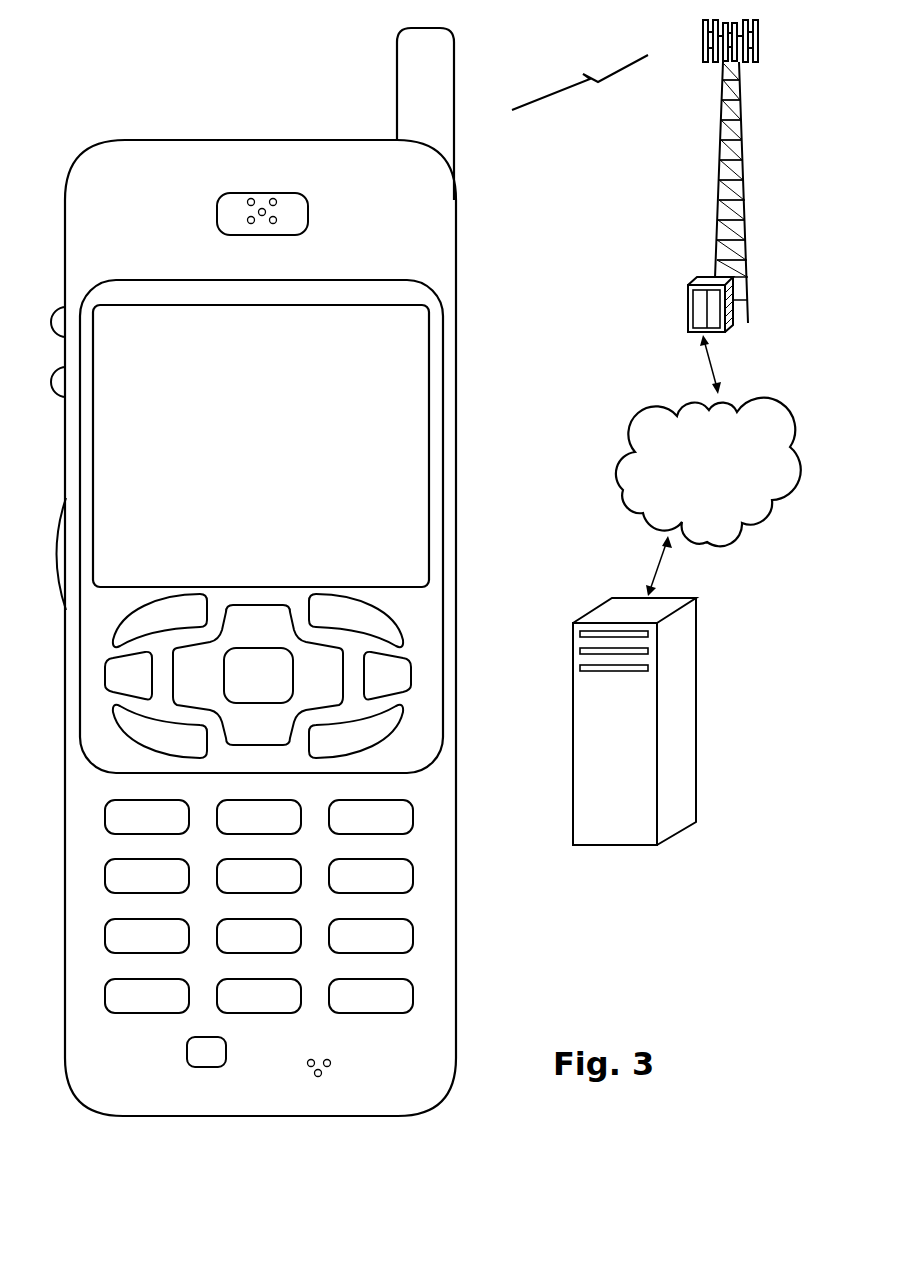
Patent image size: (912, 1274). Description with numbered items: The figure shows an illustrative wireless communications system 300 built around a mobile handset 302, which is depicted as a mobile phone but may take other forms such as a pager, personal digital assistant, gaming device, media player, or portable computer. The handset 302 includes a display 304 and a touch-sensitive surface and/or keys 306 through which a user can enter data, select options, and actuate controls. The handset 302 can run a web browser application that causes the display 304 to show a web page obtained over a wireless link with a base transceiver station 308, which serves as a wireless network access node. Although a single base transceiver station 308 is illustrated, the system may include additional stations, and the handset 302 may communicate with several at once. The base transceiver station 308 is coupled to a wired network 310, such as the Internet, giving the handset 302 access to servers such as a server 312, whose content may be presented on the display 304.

The wireless communications system 300 is at (258, 90).
The handset 302 is at (108, 1117).
The display 304 is at (430, 316).
The touch-sensitive surface and/or keys 306 is at (460, 598).
The base transceiver station 308 is at (718, 190).
The wired network 310 is at (636, 513).
The server 312 is at (612, 846).